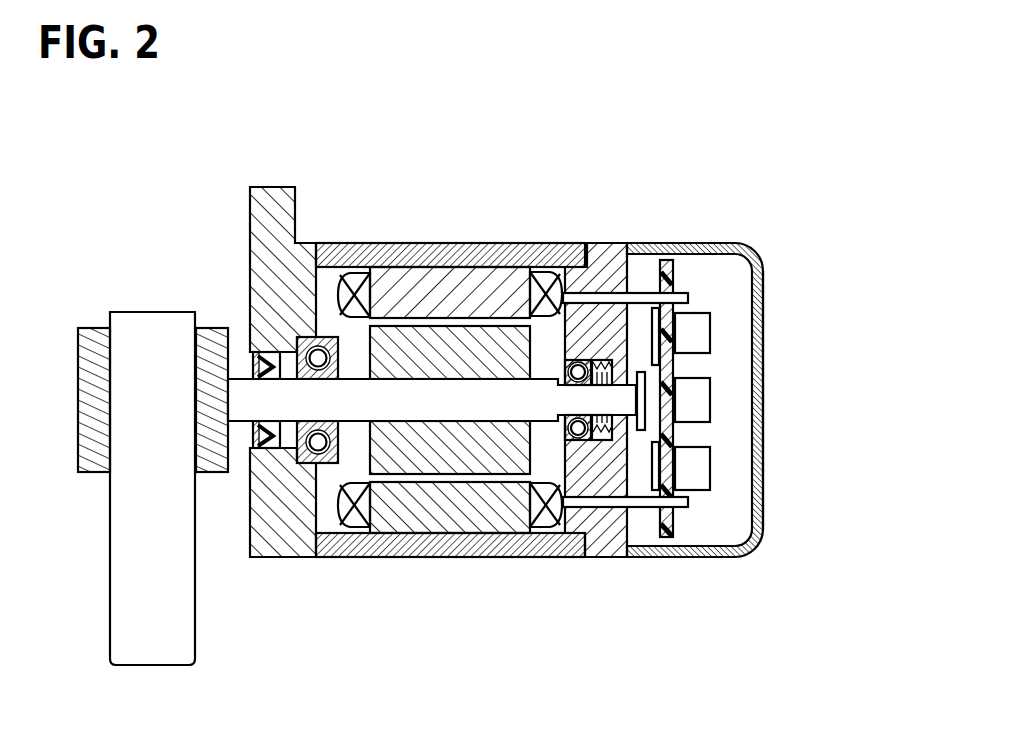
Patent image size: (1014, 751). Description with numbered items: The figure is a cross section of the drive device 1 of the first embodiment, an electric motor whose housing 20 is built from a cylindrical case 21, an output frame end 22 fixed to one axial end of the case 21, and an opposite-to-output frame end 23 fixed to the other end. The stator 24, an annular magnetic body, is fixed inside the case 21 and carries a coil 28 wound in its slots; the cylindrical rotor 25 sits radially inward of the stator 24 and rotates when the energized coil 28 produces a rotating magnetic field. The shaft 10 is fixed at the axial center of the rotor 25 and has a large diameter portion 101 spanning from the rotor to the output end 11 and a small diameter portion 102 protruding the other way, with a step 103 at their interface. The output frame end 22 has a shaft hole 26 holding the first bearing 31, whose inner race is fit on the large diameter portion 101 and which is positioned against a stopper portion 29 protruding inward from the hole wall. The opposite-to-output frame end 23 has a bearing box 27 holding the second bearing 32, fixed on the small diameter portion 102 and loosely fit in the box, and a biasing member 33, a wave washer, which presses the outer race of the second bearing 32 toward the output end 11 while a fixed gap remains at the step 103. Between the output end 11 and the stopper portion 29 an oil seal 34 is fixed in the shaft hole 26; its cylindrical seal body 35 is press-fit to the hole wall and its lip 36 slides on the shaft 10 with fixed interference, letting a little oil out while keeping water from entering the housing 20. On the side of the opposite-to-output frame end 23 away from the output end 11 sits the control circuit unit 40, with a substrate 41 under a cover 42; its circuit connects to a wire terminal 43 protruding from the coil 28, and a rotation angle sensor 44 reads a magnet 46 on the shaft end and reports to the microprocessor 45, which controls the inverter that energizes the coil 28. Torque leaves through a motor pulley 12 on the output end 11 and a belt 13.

The drive device 1 is at (306, 103).
The shaft 10 is at (452, 395).
The large diameter portion 101 is at (396, 398).
The small diameter portion 102 is at (603, 396).
The step 103 is at (601, 405).
The output end 11 is at (233, 425).
The motor pulley 12 is at (88, 388).
The belt 13 is at (130, 572).
The housing 20 is at (460, 418).
The case 21 is at (452, 548).
The output frame end 22 is at (298, 524).
The opposite-to-output frame end 23 is at (613, 546).
The stator 24 is at (483, 300).
The rotor 25 is at (432, 345).
The shaft hole 26 is at (290, 368).
The bearing box 27 is at (568, 370).
The coil 28 is at (538, 250).
The stopper portion 29 is at (288, 455).
The first bearing 31 is at (318, 352).
The second bearing 32 is at (602, 360).
The biasing member 33 is at (646, 544).
The oil seal 34 is at (219, 295).
The seal body 35 is at (252, 353).
The lip 36 is at (252, 372).
The control circuit unit 40 is at (725, 372).
The substrate 41 is at (673, 283).
The cover 42 is at (765, 292).
The wire terminal 43 is at (645, 302).
The rotation angle sensor 44 is at (650, 416).
The microprocessor 45 is at (646, 463).
The magnet 46 is at (645, 380).